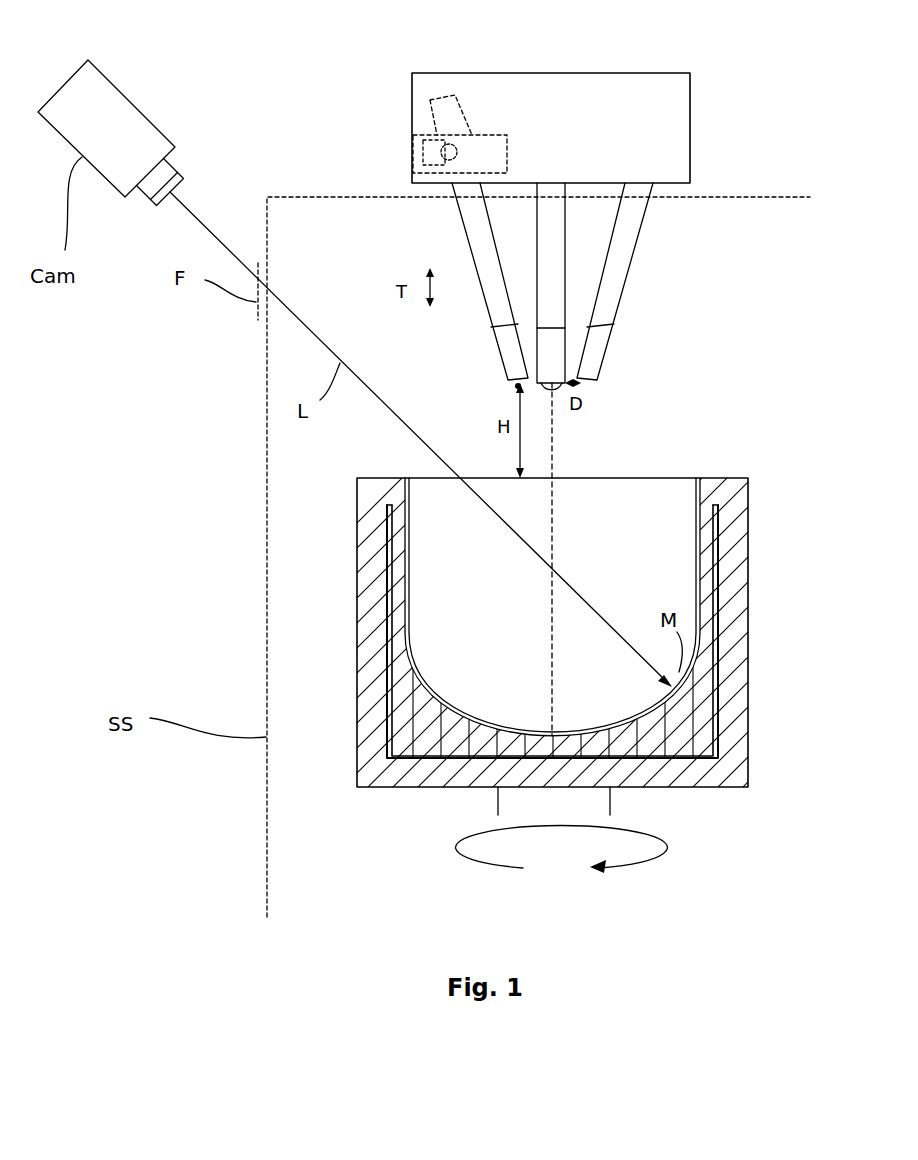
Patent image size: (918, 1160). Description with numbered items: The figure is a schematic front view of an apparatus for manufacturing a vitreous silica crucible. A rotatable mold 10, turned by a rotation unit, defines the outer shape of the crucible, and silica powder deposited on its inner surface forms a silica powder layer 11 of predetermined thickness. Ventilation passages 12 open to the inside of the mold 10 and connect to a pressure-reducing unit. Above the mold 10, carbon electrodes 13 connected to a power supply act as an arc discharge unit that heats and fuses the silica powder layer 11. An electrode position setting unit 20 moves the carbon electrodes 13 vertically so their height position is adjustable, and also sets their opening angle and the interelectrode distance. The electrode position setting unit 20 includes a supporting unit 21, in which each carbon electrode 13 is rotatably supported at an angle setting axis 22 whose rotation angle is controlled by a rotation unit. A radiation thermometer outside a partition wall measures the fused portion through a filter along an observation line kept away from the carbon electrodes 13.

The mold 10 is at (750, 779).
The silica powder layer 11 is at (405, 640).
The ventilation passages 12 is at (387, 603).
The carbon electrodes 13 is at (457, 223).
The electrode position setting unit 20 is at (690, 100).
The supporting unit 21 is at (507, 135).
The angle setting axis 22 is at (412, 150).